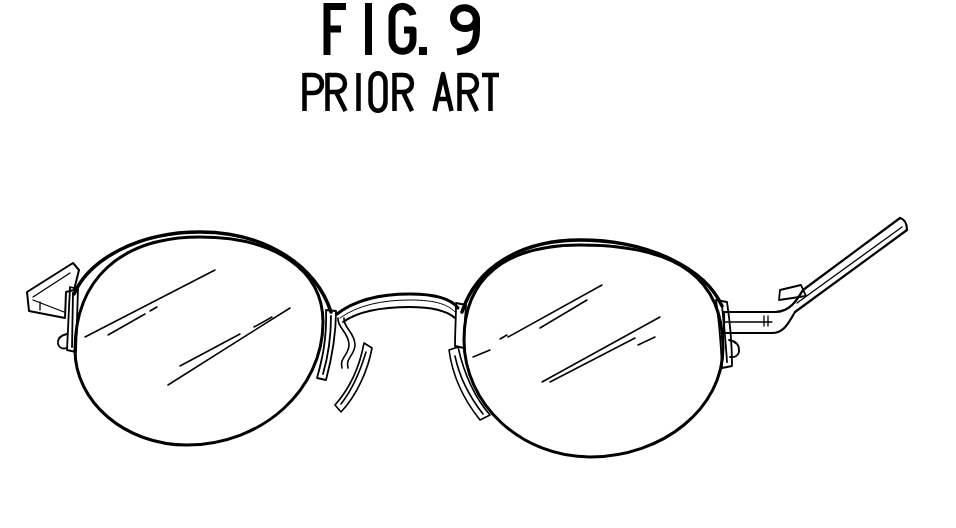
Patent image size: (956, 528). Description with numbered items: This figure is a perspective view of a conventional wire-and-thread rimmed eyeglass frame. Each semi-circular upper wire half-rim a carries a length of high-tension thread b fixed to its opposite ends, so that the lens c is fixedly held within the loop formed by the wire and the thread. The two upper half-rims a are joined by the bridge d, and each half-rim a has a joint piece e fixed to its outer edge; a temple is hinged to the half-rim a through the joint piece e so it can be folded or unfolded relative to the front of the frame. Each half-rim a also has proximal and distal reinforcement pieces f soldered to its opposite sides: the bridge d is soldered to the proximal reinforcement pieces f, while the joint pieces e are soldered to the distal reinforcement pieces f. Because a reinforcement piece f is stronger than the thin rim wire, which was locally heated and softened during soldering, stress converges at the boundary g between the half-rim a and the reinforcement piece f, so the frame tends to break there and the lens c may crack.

The semi-circular wire rim a is at (133, 244).
The high-tension thread b is at (142, 438).
The lens c is at (199, 366).
The bridge d is at (387, 302).
The joint piece e is at (786, 318).
The reinforcement piece f is at (448, 347).
The boundary g is at (757, 261).